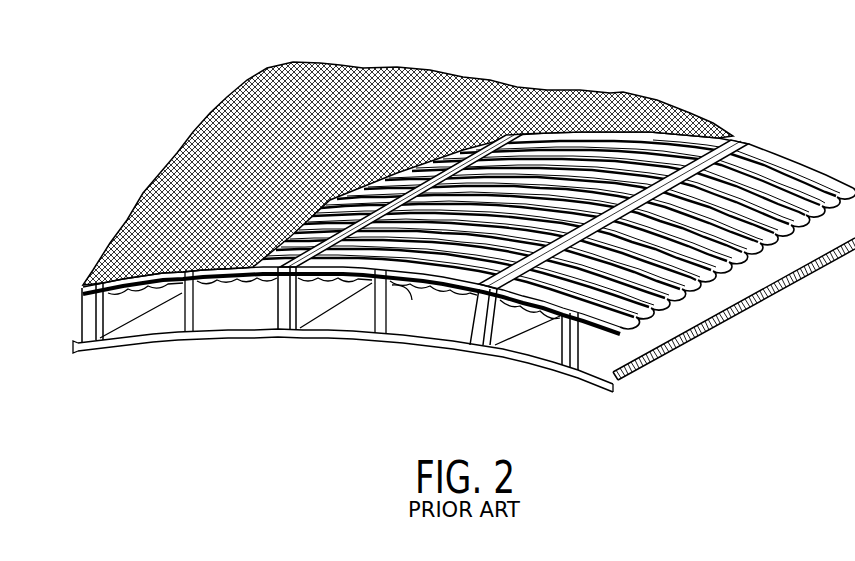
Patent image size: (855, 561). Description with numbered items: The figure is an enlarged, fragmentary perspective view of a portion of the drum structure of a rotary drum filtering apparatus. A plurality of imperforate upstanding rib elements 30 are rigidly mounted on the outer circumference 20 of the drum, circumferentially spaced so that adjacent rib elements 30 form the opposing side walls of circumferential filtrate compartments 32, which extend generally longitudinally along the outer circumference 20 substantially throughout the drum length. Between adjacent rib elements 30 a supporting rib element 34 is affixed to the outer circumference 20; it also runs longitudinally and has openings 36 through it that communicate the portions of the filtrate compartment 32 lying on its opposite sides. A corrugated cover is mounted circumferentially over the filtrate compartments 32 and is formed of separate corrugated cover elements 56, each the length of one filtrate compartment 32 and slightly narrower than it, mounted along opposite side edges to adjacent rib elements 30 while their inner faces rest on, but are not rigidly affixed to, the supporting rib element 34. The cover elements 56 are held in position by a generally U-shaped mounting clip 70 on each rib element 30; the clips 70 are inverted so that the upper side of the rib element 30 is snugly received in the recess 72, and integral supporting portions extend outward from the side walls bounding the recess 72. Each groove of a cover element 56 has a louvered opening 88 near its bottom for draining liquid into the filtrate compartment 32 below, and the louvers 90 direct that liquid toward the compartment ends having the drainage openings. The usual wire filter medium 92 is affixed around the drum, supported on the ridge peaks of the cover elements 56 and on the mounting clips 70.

The outer circumference 20 is at (737, 290).
The rib element 30 is at (93, 310).
The filtrate compartment 32 is at (237, 313).
The supporting rib element 34 is at (173, 323).
The opening 36 is at (197, 308).
The corrugated cover element 56 is at (677, 157).
The mounting clip 70 is at (262, 274).
The recess 72 is at (483, 287).
The louvered opening 88 is at (523, 323).
The louver 90 is at (322, 292).
The wire filter medium 92 is at (520, 96).